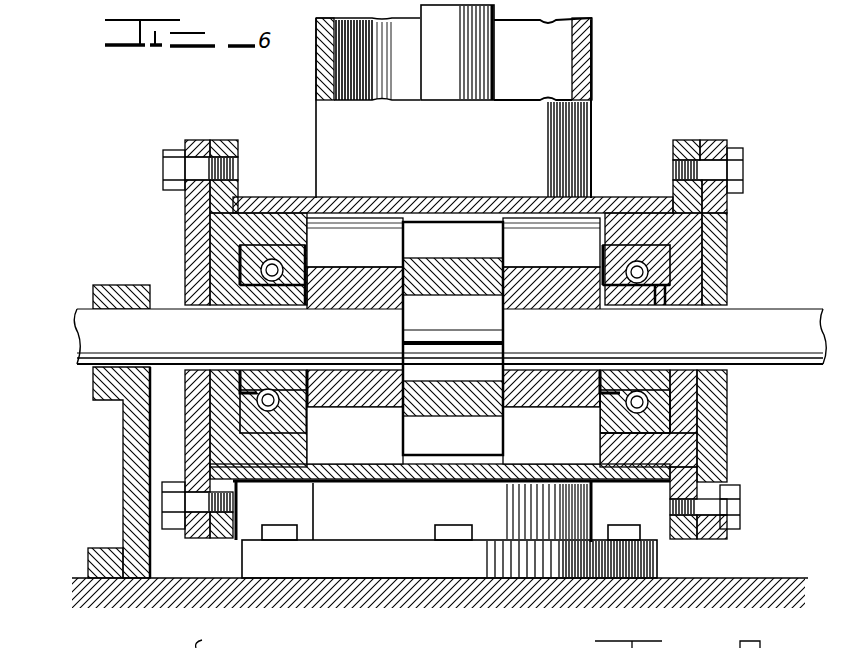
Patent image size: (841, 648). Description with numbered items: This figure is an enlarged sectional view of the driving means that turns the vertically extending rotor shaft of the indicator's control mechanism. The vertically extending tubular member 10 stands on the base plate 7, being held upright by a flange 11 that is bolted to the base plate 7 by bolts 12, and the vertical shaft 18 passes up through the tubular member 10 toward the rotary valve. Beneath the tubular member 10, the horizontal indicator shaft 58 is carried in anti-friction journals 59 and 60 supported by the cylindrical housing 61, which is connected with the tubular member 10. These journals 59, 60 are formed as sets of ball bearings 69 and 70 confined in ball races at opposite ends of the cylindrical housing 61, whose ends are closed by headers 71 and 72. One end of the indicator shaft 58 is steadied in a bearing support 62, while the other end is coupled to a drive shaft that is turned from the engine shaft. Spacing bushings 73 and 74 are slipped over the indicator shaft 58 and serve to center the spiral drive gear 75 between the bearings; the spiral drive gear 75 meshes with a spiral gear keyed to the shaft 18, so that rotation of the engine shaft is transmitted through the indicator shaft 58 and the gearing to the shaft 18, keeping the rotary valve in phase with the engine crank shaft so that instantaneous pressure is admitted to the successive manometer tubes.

The base plate 7 is at (513, 592).
The tubular member 10 is at (594, 70).
The flange 11 is at (435, 565).
The bolts 12 is at (287, 526).
The shaft 18 is at (462, 90).
The indicator shaft 58 is at (165, 329).
The anti-friction journal 59 is at (262, 212).
The anti-friction journal 60 is at (633, 212).
The housing 61 is at (360, 482).
The bearing support 62 is at (115, 386).
The ball bearings 69 is at (307, 268).
The ball bearings 70 is at (660, 262).
The header 71 is at (187, 217).
The header 72 is at (728, 225).
The spacing bushing 73 is at (362, 400).
The spacing bushing 74 is at (540, 407).
The spiral drive gear 75 is at (497, 280).